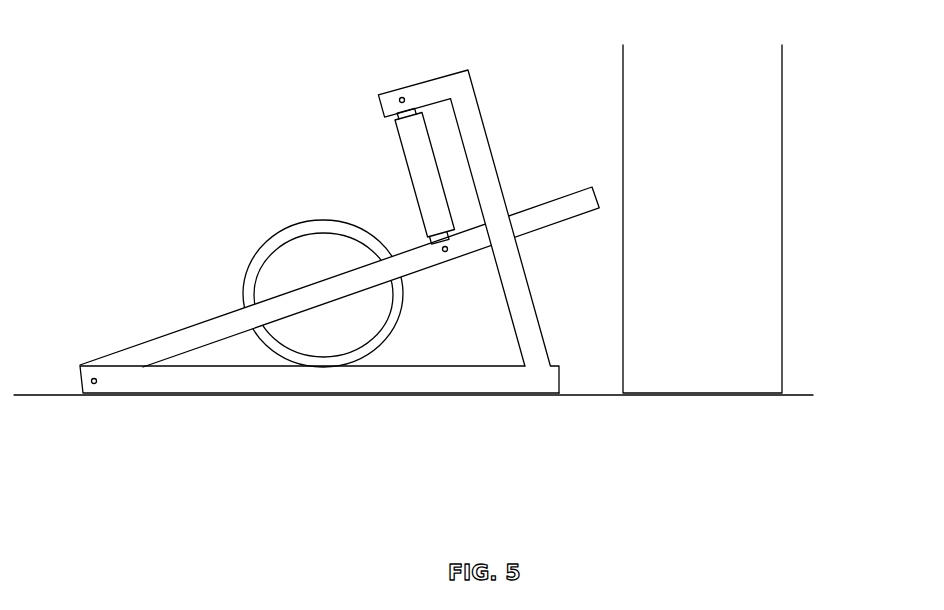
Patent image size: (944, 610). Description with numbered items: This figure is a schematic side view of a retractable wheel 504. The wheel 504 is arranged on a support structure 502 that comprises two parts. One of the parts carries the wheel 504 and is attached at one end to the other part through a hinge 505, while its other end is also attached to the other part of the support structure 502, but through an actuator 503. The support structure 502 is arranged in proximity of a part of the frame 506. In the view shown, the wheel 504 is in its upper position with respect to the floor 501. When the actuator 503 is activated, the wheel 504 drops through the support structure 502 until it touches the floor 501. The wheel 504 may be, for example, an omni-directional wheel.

The floor 501 is at (592, 398).
The support structure 502 is at (475, 128).
The actuator 503 is at (423, 182).
The retractable wheel 504 is at (252, 280).
The hinge 505 is at (94, 384).
The frame 506 is at (735, 315).